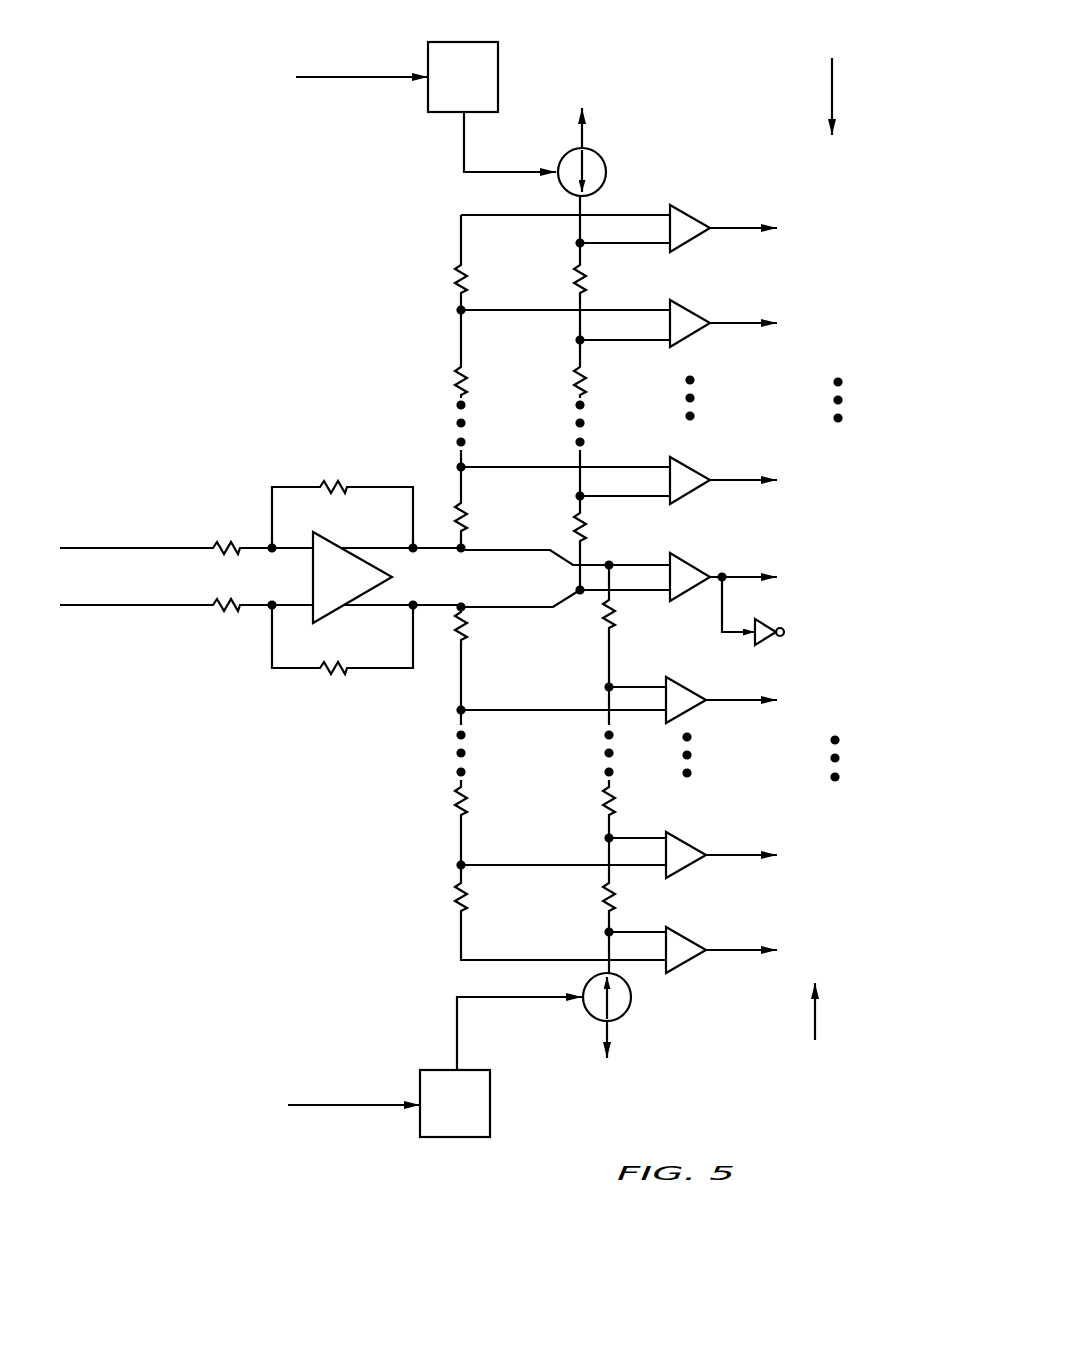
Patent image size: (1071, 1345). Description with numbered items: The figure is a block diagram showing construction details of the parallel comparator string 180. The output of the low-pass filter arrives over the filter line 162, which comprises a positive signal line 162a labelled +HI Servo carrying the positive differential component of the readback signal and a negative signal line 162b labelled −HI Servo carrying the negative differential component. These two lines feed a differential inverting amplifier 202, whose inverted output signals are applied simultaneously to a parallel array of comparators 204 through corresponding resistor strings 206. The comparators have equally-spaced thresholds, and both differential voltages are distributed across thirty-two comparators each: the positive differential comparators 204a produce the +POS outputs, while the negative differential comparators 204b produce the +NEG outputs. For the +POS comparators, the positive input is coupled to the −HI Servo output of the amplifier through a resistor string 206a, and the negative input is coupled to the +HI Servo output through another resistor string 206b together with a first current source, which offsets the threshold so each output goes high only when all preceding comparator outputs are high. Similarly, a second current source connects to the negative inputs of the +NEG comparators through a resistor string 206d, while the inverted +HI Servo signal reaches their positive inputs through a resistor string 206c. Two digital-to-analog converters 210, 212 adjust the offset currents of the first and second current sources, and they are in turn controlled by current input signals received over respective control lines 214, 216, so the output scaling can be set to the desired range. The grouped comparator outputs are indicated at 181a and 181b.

The parallel comparator string 180 is at (160, 225).
The filter line 162 is at (132, 447).
The positive signal line 162a is at (195, 607).
The negative signal line 162b is at (196, 547).
The differential inverting amplifier 202 is at (313, 612).
The parallel array of comparators 204 is at (707, 195).
The positive differential comparators 204a is at (668, 246).
The negative differential comparators 204b is at (666, 684).
The resistor strings 206 is at (615, 140).
The resistor string 206a is at (428, 257).
The resistor string 206b is at (562, 375).
The resistor string 206c is at (420, 808).
The resistor string 206d is at (547, 738).
The digital-to-analog converter 210 is at (458, 42).
The digital-to-analog converter 212 is at (445, 1138).
The control line 214 is at (352, 80).
The control line 216 is at (345, 1107).
The positive position outputs 181a is at (832, 117).
The negative position outputs 181b is at (820, 1030).